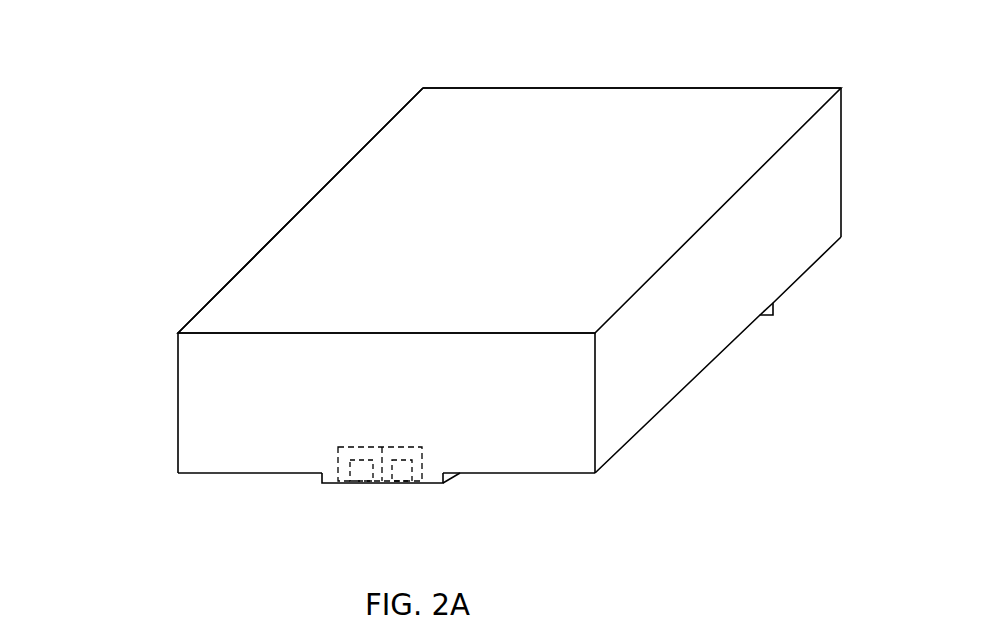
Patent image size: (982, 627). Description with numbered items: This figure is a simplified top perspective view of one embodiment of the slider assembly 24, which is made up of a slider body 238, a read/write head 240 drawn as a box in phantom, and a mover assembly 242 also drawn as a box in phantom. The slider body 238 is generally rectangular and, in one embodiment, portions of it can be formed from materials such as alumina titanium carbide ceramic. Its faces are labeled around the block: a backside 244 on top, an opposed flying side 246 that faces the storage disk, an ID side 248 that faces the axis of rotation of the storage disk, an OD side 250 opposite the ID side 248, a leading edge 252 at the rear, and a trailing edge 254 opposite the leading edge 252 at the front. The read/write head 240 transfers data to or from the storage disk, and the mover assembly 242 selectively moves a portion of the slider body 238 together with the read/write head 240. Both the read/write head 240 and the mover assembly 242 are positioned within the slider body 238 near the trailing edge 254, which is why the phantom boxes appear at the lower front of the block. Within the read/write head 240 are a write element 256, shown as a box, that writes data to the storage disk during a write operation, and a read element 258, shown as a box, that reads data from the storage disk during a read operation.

The slider assembly 24 is at (457, 286).
The slider body 238 is at (442, 110).
The read/write head 240 is at (215, 450).
The mover assembly 242 is at (420, 481).
The backside 244 is at (323, 215).
The flying side 246 is at (587, 475).
The ID side 248 is at (782, 267).
The OD side 250 is at (217, 294).
The leading edge 252 is at (758, 88).
The trailing edge 254 is at (576, 443).
The write element 256 is at (403, 467).
The read element 258 is at (356, 461).